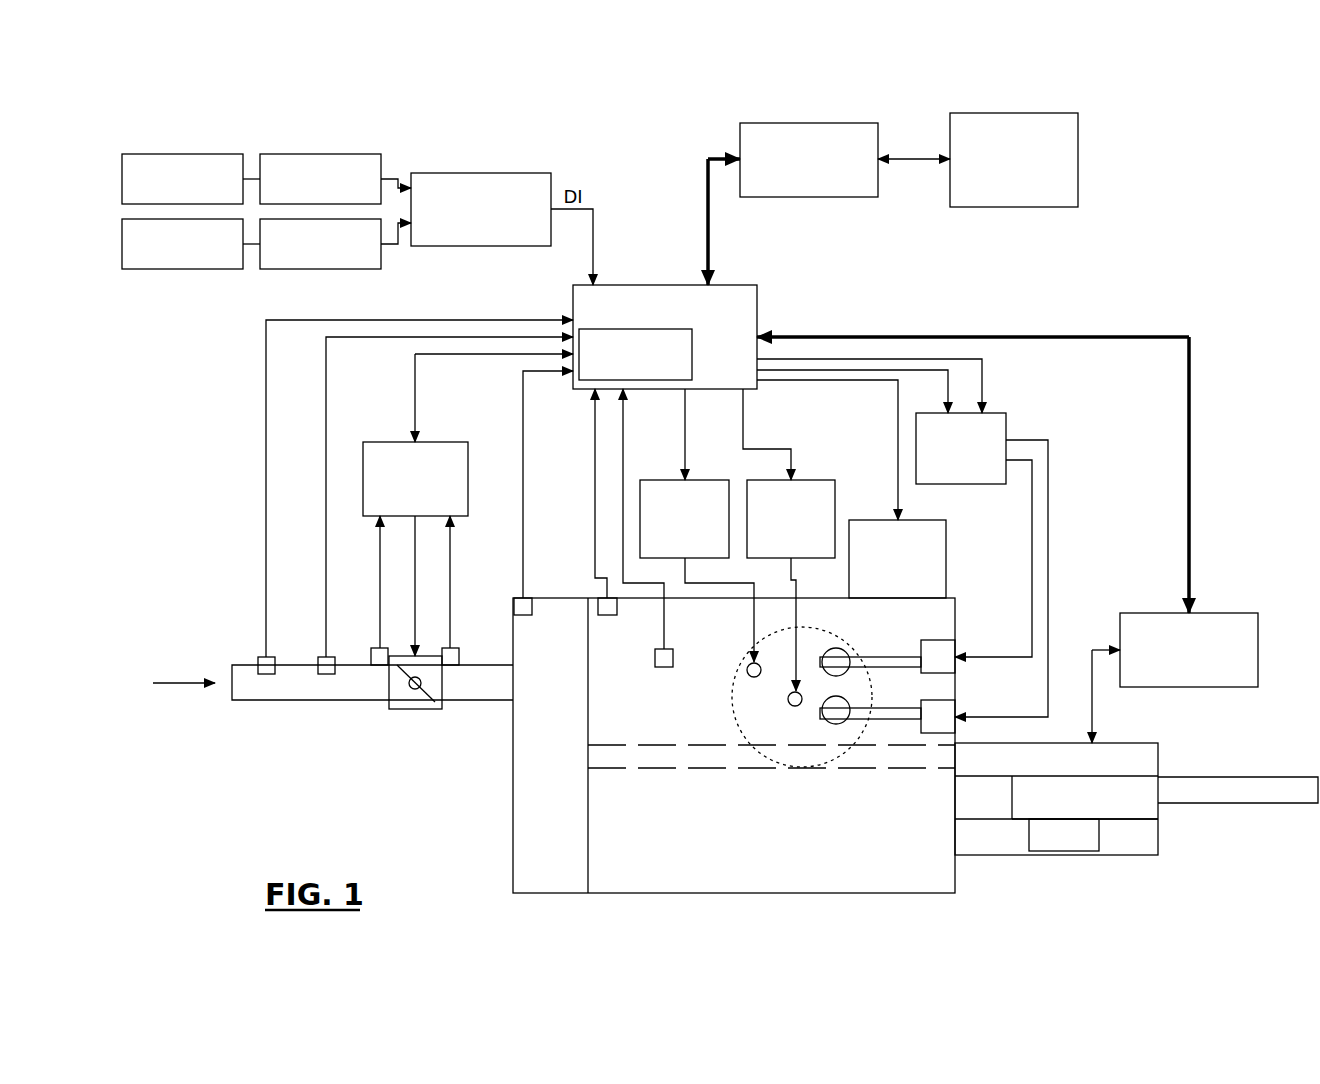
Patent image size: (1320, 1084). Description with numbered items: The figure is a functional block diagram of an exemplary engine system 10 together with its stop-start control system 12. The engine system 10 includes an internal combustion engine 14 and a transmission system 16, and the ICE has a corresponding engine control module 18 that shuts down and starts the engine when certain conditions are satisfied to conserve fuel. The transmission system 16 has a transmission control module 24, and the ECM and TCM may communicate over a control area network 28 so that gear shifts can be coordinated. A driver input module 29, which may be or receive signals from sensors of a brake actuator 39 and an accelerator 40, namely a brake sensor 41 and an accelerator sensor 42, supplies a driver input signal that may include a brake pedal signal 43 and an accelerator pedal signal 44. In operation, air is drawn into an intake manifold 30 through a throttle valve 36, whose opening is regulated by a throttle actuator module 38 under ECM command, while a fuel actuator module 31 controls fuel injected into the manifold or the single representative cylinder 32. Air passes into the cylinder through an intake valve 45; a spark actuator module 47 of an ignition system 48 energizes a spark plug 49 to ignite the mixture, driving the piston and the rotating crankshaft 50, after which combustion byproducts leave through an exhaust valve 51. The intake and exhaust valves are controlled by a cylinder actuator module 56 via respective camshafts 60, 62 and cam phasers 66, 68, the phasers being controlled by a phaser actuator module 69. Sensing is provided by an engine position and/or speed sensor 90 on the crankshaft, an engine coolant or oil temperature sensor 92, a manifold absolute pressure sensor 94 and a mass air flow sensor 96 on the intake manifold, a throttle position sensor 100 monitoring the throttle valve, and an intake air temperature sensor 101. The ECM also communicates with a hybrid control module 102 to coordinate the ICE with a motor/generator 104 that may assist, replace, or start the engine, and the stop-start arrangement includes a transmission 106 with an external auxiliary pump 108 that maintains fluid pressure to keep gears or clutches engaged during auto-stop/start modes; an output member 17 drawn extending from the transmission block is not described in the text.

The engine system 10 is at (1230, 130).
The stop-start control system 12 is at (223, 127).
The internal combustion engine 14 is at (692, 350).
The transmission system 16 is at (1158, 743).
The shaft 17 is at (1265, 777).
The engine control module 18 is at (665, 285).
The transmission control module 24 is at (1258, 648).
The control area network 28 is at (708, 185).
The driver input module 29 is at (468, 173).
The intake manifold 30 is at (665, 480).
The fuel actuator module 31 is at (762, 768).
The cylinder 32 is at (748, 663).
The throttle valve 36 is at (410, 709).
The throttle actuator module 38 is at (388, 442).
The brake actuator 39 is at (170, 154).
The accelerator 40 is at (175, 269).
The brake sensor 41 is at (310, 154).
The accelerator sensor 42 is at (310, 269).
The brake pedal signal BRAKE 43 is at (398, 172).
The accelerator pedal signal ACCEL 44 is at (398, 250).
The intake valve 45 is at (837, 648).
The spark actuator module 47 is at (816, 480).
The ignition system 48 is at (823, 423).
The spark plug 49 is at (788, 699).
The crankshaft 50 is at (657, 770).
The exhaust valve 51 is at (840, 724).
The cylinder actuator module 56 is at (946, 548).
The camshaft 60 is at (893, 657).
The camshaft 62 is at (895, 719).
The cam phaser 66 is at (937, 640).
The cam phaser 68 is at (940, 733).
The phaser actuator module 69 is at (1006, 420).
The engine position and/or speed sensor 90 is at (665, 667).
The engine coolant or oil temperature sensor 92 is at (607, 615).
The manifold absolute pressure sensor 94 is at (516, 598).
The mass air flow sensor 96 is at (322, 675).
The throttle position sensor 100 is at (375, 666).
The intake air temperature sensor 101 is at (258, 660).
The hybrid control module 102 is at (816, 197).
The motor/generator 104 is at (1028, 207).
The transmission 106 is at (1145, 820).
The auxiliary pump 108 is at (1065, 851).